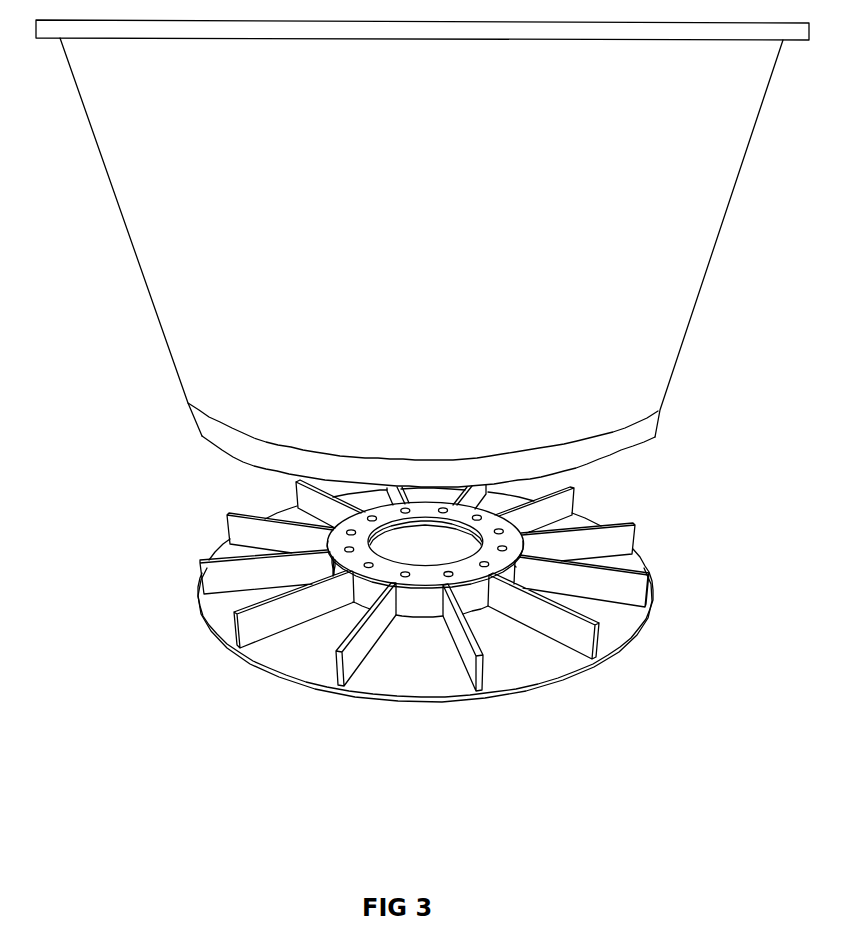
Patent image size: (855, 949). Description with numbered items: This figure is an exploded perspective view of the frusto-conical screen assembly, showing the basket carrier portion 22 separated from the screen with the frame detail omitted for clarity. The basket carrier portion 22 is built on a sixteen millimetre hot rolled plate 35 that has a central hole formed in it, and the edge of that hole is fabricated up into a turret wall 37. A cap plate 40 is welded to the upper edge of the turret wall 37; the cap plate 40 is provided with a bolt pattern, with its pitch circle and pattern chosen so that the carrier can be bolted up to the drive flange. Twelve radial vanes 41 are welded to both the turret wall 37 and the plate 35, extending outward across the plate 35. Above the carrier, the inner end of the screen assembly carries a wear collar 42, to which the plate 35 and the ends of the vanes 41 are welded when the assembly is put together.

The basket carrier portion 22 is at (664, 547).
The hot rolled plate 35 is at (540, 667).
The turret wall 37 is at (418, 603).
The cap plate 40 is at (508, 538).
The radial vanes 41 is at (624, 588).
The wear collar 42 is at (640, 431).